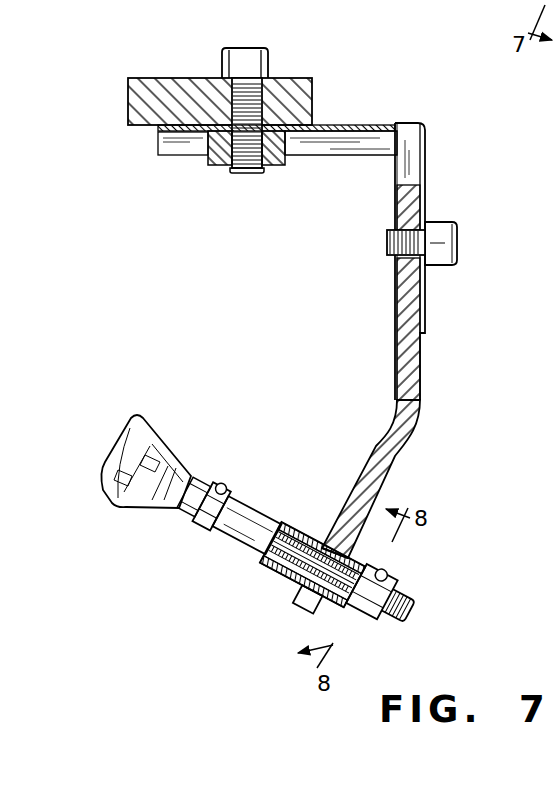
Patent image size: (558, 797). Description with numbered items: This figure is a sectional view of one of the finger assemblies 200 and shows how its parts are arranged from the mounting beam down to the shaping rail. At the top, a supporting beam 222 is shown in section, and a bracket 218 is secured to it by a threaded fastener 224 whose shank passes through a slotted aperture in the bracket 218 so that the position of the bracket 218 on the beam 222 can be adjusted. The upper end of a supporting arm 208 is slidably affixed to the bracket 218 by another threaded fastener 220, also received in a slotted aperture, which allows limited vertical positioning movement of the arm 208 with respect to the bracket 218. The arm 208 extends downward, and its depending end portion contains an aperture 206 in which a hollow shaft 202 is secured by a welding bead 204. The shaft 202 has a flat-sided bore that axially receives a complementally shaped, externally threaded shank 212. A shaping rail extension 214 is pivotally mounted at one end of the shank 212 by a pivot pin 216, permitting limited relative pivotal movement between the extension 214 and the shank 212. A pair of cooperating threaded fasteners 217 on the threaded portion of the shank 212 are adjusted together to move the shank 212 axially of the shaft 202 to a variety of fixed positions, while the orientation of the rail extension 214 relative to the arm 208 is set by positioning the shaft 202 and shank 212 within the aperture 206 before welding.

The finger assembly 200 is at (152, 607).
The shaft 202 is at (258, 515).
The welding bead 204 is at (350, 560).
The aperture 206 is at (326, 556).
The supporting arm 208 is at (397, 467).
The shank 212 is at (292, 562).
The shaping rail extension 214 is at (118, 508).
The pivot pin 216 is at (181, 455).
The threaded fasteners 217 is at (226, 487).
The bracket 218 is at (427, 160).
The threaded fastener 220 is at (458, 243).
The supporting beam 222 is at (138, 115).
The threaded fastener 224 is at (232, 55).